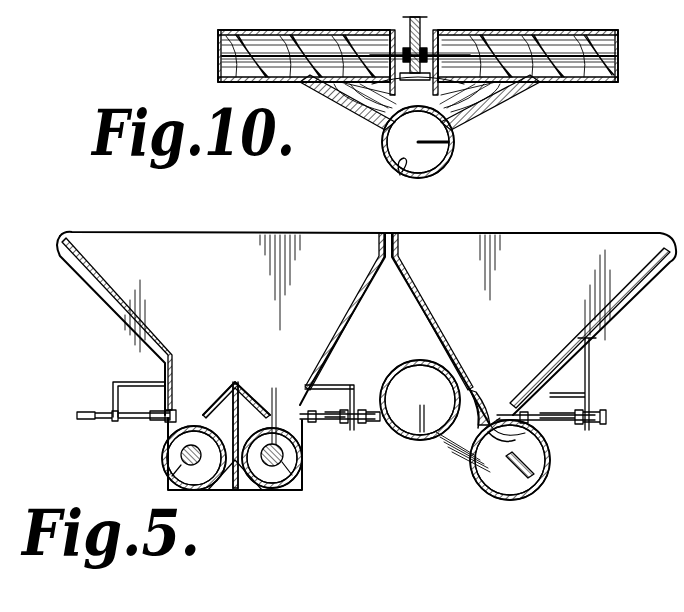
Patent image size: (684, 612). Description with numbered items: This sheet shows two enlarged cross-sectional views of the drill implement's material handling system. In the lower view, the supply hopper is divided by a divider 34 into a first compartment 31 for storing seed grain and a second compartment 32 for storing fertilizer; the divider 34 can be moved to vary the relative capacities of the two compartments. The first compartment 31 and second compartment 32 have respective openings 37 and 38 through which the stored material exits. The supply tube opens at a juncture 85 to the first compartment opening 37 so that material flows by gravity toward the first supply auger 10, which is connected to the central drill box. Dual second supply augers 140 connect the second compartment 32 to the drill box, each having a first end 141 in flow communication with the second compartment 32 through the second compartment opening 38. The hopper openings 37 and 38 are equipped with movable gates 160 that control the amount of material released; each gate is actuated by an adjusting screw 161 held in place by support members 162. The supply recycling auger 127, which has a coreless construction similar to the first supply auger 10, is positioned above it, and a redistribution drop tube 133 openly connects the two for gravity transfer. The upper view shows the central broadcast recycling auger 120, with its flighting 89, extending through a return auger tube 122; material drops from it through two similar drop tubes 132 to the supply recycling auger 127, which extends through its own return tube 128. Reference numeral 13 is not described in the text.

In FIG. 5, the first supply auger 10 is at (540, 470).
In FIG. 5, the body 13 is at (0, 204).
In FIG. 5, the first compartment 31 is at (535, 310).
In FIG. 5, the second compartment 32 is at (260, 299).
In FIG. 5, the divider 34 is at (395, 243).
In FIG. 5, the first compartment opening 37 is at (493, 411).
In FIG. 5, the second compartment opening 38 is at (206, 410).
In FIG. 5, the juncture 85 is at (496, 436).
In FIG. 10, the flighting 89 is at (668, 57).
In FIG. 10, the central broadcast recycling auger 120 is at (222, 64).
In FIG. 10, the return auger tube 122 is at (318, 64).
In FIG. 10, the supply recycling auger 127 is at (452, 156).
In FIG. 5, the supply recycling auger 127 is at (430, 404).
In FIG. 10, the return tube 128 is at (398, 168).
In FIG. 10, the drop tube 132 is at (372, 118).
In FIG. 5, the redistribution drop tube 133 is at (452, 460).
In FIG. 5, the second supply auger 140 is at (172, 462).
In FIG. 5, the first end 141 is at (232, 504).
In FIG. 5, the movable gate 160 is at (322, 420).
In FIG. 5, the adjusting screw 161 is at (105, 420).
In FIG. 5, the support member 162 is at (132, 384).